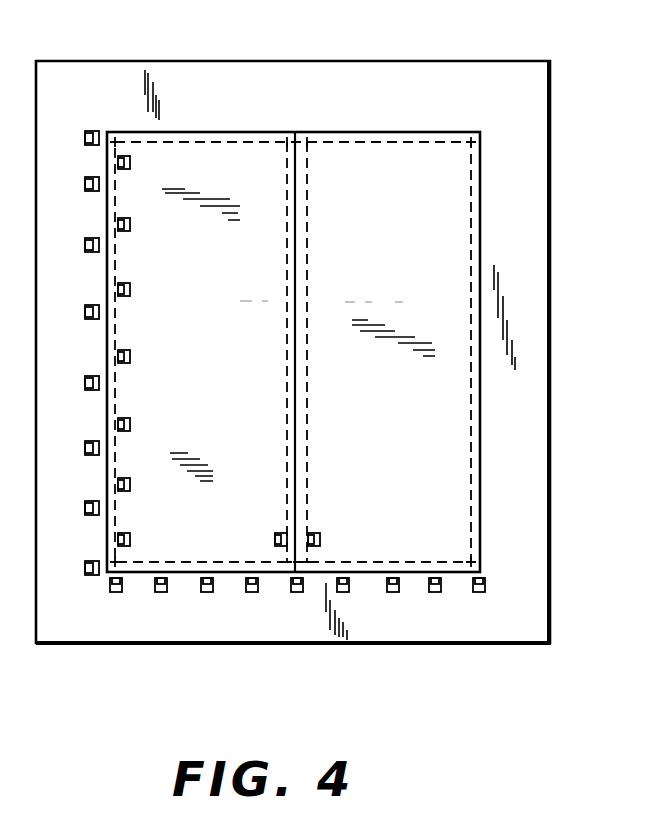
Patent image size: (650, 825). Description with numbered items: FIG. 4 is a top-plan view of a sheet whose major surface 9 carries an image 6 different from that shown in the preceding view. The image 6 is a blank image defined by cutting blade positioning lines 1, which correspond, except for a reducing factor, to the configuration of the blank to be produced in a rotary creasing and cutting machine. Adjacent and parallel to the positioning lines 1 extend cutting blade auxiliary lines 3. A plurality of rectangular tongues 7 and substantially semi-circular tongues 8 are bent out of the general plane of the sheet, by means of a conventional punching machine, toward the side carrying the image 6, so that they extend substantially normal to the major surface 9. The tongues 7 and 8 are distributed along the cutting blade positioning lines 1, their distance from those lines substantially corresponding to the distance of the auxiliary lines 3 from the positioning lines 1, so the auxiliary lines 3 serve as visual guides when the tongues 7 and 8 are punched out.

The cutting blade positioning line 1 is at (279, 555).
The cutting blade auxiliary line 3 is at (195, 565).
The blank image 6 is at (252, 155).
The rectangular tongue 7 is at (112, 592).
The semi-circular tongue 8 is at (485, 572).
The major surface 9 is at (530, 623).